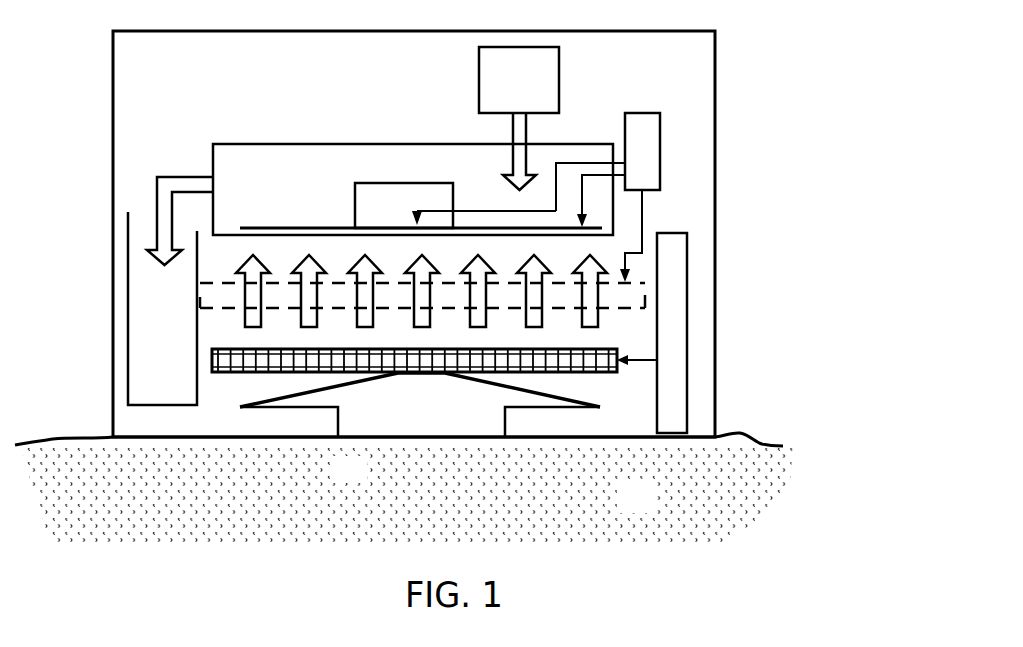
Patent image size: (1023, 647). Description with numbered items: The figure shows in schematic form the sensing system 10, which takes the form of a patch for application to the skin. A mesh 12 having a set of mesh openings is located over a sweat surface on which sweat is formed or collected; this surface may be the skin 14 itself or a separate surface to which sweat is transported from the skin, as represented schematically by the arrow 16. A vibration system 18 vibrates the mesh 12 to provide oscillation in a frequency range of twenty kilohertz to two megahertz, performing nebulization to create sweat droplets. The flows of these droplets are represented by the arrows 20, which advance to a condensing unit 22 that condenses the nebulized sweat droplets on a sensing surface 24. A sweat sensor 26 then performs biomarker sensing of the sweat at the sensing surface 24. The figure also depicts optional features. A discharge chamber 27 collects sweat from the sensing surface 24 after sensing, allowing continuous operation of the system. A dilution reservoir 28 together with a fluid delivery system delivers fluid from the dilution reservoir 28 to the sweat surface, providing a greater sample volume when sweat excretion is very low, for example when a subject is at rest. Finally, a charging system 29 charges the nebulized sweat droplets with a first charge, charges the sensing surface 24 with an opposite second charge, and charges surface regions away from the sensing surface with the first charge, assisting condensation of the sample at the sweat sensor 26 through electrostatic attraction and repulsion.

The sensing system 10 is at (761, 141).
The mesh 12 is at (233, 348).
The skin 14 is at (650, 507).
The arrow 16 is at (405, 412).
The vibration system 18 is at (672, 233).
The arrows 20 is at (238, 308).
The condensing unit 22 is at (438, 144).
The sensing surface 24 is at (295, 225).
The sweat sensor 26 is at (367, 183).
The discharge chamber 27 is at (130, 303).
The dilution reservoir 28 is at (559, 87).
The charging system 29 is at (661, 137).